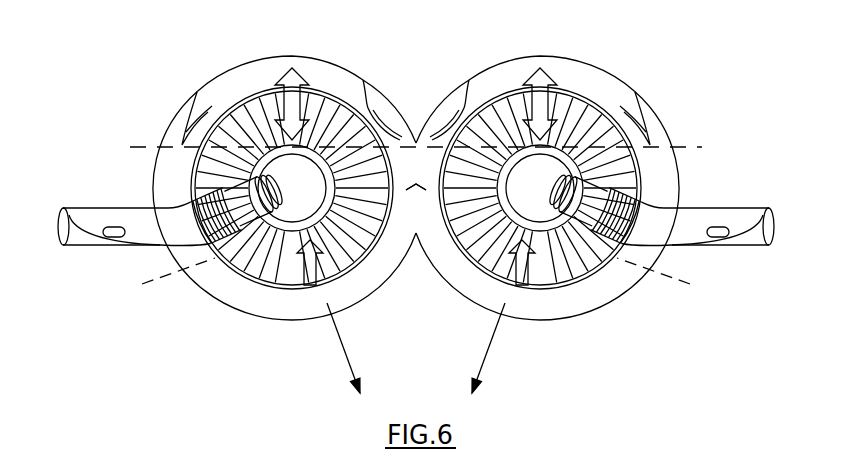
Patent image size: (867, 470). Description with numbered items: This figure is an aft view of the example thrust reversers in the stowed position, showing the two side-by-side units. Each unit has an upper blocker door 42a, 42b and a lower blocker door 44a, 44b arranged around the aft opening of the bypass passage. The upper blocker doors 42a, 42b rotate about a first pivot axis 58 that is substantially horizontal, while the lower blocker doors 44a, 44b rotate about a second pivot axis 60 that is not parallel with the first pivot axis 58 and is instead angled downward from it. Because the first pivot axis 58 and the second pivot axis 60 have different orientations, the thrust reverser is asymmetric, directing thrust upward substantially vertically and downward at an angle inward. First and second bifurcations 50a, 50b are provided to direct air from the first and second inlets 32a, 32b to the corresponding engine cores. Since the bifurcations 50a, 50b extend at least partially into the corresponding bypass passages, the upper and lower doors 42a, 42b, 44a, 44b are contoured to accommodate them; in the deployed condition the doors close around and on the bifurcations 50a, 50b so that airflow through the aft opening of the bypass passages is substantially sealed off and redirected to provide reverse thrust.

The first inlet 32a is at (109, 196).
The second inlet 32b is at (723, 196).
The upper blocker door 42a is at (232, 87).
The upper blocker door 42b is at (596, 87).
The lower blocker door 44a is at (287, 310).
The lower blocker door 44b is at (545, 310).
The first bifurcation 50a is at (200, 177).
The second bifurcation 50b is at (647, 187).
The first pivot axis 58 is at (179, 147).
The second pivot axis 60 is at (165, 277).